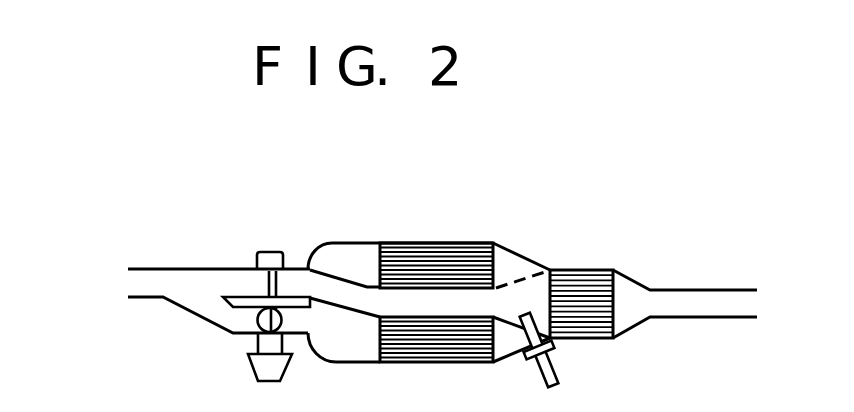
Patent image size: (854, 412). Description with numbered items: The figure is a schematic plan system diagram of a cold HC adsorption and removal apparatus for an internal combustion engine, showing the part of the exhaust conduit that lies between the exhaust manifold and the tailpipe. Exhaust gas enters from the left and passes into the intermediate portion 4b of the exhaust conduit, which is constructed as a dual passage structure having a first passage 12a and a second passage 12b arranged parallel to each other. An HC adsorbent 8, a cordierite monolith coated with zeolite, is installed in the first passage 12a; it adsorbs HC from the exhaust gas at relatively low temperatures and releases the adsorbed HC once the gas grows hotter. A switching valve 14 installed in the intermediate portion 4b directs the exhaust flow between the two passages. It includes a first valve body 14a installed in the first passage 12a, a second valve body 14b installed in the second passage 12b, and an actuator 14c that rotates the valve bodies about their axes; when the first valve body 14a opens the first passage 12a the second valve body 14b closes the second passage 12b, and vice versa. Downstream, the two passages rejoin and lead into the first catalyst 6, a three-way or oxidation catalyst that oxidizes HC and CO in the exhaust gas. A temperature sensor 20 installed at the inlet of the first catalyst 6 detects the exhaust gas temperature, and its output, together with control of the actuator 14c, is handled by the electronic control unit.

The intermediate portion 4b is at (363, 245).
The first catalyst 6 is at (580, 287).
The HC adsorbent 8 is at (423, 262).
The first passage 12a is at (333, 339).
The second passage 12b is at (344, 291).
The switching valve 14 is at (201, 299).
The first valve body 14a is at (190, 310).
The second valve body 14b is at (266, 283).
The actuator 14c is at (267, 367).
The temperature sensor 20 is at (552, 367).